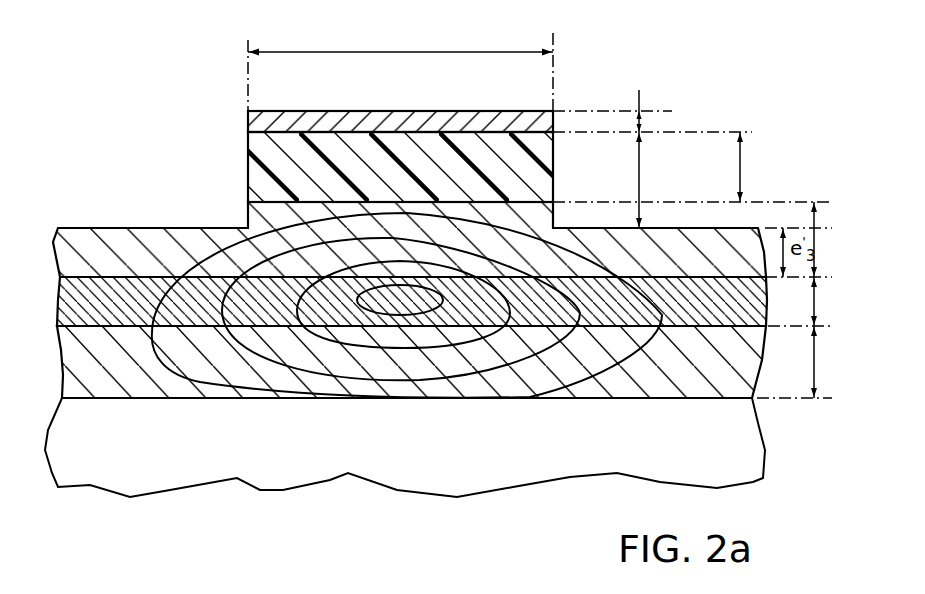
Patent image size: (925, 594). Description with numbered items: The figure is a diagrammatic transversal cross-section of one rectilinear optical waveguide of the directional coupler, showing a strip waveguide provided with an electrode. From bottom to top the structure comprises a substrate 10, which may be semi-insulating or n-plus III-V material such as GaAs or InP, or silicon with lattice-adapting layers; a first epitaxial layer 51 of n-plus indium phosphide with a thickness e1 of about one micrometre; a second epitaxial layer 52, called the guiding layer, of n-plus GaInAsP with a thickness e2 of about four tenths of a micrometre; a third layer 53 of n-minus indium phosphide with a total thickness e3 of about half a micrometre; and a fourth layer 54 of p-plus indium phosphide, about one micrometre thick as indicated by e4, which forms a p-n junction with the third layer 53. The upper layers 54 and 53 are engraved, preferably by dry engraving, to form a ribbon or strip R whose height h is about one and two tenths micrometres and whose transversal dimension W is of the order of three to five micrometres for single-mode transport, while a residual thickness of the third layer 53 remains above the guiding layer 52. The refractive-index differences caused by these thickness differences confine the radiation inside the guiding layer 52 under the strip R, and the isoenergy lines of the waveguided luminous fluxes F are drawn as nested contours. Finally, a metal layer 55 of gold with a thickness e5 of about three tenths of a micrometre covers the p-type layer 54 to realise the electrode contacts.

The substrate 10 is at (738, 460).
The first epitaxial layer 51 is at (93, 373).
The guiding layer 52 is at (102, 297).
The third layer 53 is at (78, 243).
The fourth layer 54 is at (541, 162).
The metal layer 55 is at (250, 120).
The strip R is at (247, 152).
The waveguided luminous fluxes F is at (184, 397).
The transversal dimension W is at (400, 69).
The height of the strip h is at (647, 180).
The thickness of the first epitaxial layer e1 is at (801, 362).
The thickness of the guiding layer e2 is at (800, 301).
The total thickness of the third layer e3 is at (816, 240).
The thickness of the fourth layer e4 is at (752, 167).
The thickness of the metal layer e5 is at (645, 117).